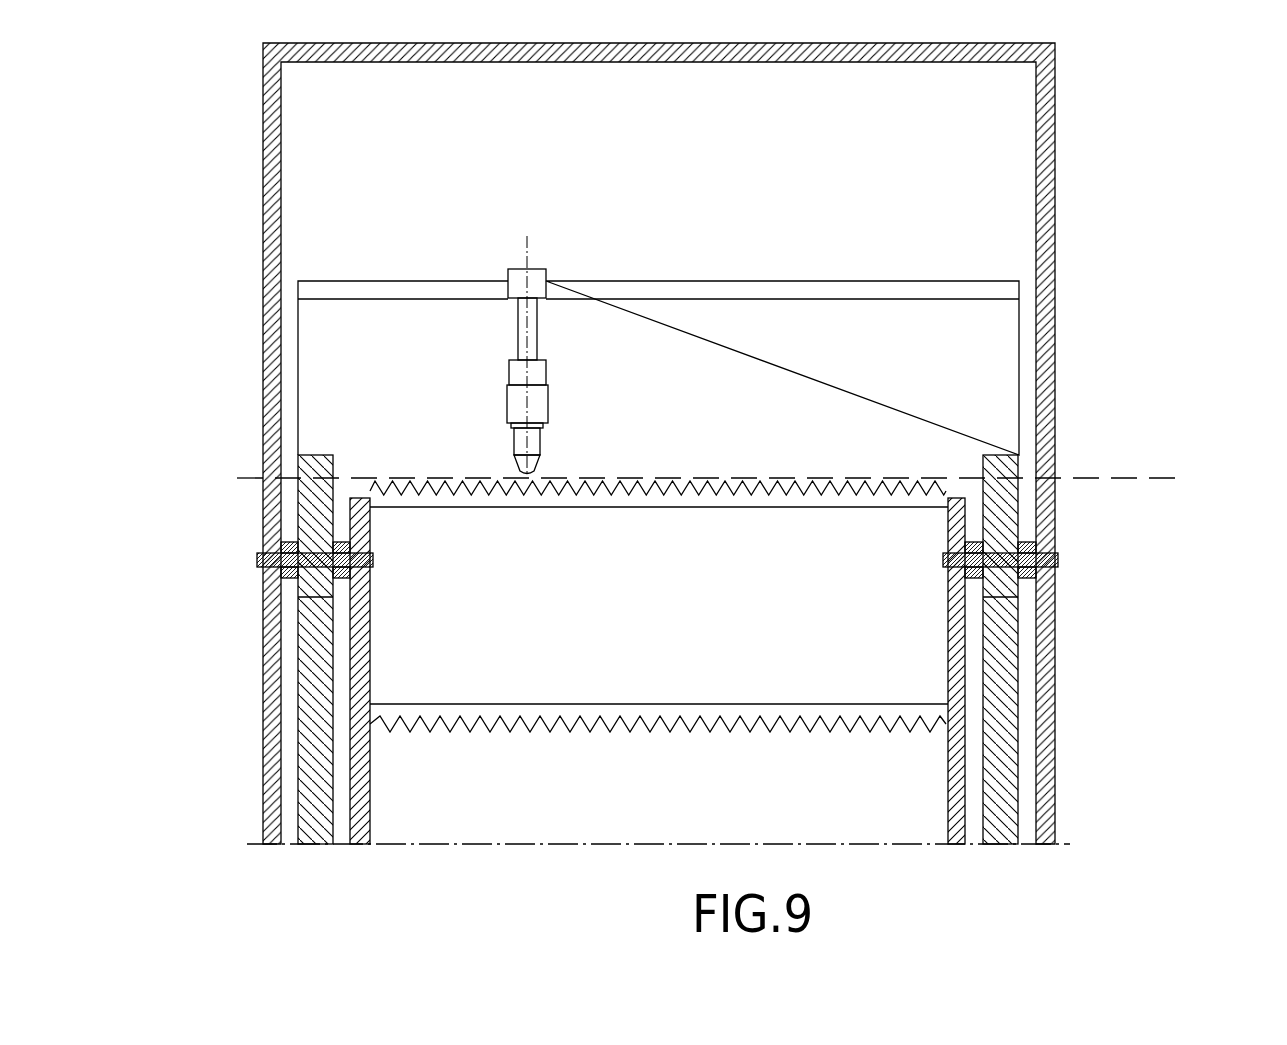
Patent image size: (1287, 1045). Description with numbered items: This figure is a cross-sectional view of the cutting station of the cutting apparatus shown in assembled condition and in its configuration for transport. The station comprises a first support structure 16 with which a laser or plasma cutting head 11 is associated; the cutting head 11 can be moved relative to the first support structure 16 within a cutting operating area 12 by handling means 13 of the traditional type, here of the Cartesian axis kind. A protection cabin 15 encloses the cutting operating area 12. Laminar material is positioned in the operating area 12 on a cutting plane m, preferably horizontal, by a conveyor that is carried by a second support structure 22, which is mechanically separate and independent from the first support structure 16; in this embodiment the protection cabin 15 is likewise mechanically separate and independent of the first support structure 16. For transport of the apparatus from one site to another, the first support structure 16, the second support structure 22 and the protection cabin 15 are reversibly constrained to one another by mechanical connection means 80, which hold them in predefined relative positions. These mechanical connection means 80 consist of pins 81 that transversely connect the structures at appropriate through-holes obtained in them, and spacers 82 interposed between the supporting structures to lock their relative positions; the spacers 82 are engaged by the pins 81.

The laser or plasma cutting head 11 is at (507, 403).
The cutting operating area 12 is at (700, 396).
The handling means 13 is at (872, 290).
The protection cabin 15 is at (1047, 66).
The first support structure 16 is at (305, 838).
The second support structure 22 is at (362, 828).
The mechanical connection means 80 is at (670, 554).
The pins 81 is at (265, 560).
The spacers 82 is at (340, 548).
The cutting plane m is at (1178, 478).